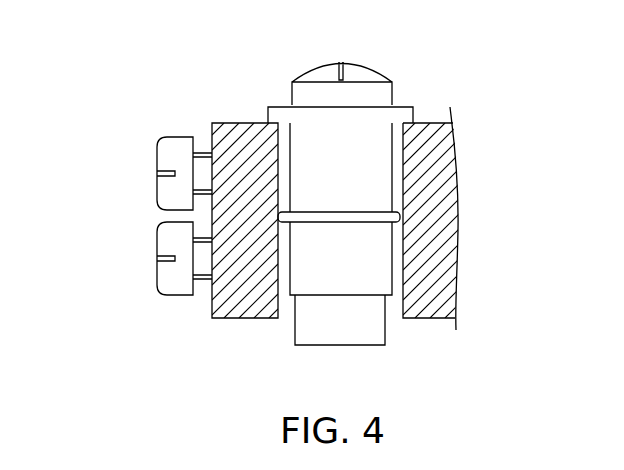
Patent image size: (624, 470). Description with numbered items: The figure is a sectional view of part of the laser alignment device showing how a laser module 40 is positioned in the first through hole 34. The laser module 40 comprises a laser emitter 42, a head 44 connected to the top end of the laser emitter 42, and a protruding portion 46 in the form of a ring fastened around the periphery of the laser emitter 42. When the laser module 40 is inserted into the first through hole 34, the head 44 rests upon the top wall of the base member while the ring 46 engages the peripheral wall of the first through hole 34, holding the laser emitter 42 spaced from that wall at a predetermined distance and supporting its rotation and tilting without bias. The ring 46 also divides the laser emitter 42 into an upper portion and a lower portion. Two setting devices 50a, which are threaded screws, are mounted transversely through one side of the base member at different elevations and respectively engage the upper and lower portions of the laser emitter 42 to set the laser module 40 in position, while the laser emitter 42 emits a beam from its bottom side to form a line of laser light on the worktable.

The first through hole 34 is at (287, 310).
The laser module 40 is at (406, 195).
The laser emitter 42 is at (358, 270).
The head 44 is at (383, 94).
The protruding portion 46 is at (363, 213).
The setting devices 50a is at (165, 155).